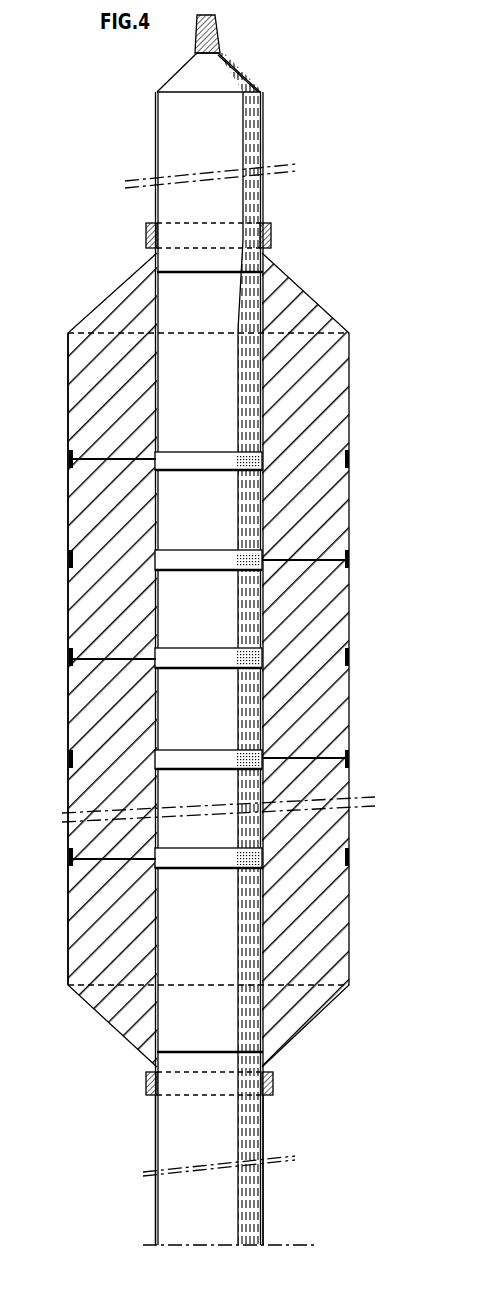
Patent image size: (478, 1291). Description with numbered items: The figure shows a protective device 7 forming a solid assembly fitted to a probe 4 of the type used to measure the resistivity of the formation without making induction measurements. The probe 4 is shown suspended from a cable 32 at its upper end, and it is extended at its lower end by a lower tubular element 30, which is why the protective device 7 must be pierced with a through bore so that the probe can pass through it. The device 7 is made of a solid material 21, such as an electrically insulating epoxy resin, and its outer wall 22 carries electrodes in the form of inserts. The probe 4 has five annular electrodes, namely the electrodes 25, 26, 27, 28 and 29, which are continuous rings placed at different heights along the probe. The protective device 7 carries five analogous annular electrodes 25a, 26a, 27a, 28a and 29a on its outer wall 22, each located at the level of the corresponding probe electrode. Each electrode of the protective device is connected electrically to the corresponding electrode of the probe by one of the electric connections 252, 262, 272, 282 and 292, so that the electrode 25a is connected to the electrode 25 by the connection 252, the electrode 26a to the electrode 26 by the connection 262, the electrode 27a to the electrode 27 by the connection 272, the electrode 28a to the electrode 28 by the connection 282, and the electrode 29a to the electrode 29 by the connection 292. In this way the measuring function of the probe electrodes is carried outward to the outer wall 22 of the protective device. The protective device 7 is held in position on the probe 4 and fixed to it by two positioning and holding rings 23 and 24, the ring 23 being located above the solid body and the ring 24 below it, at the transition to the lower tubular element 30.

The probe 4 is at (172, 310).
The protective device 7 is at (48, 332).
The solid material 21 is at (122, 990).
The outer wall 22 is at (70, 963).
The positioning and holding ring 23 is at (272, 232).
The positioning and holding ring 24 is at (146, 1088).
The annular electrode 25 is at (215, 462).
The annular electrode 25a is at (70, 462).
The electric connection 252 is at (105, 458).
The annular electrode 26 is at (215, 562).
The annular electrode 26a is at (349, 562).
The electric connection 262 is at (310, 558).
The annular electrode 27 is at (215, 660).
The annular electrode 27a is at (70, 662).
The electric connection 272 is at (107, 657).
The annular electrode 28 is at (215, 757).
The annular electrode 28a is at (349, 762).
The electric connection 282 is at (305, 758).
The annular electrode 29 is at (190, 869).
The annular electrode 29a is at (70, 862).
The electric connection 292 is at (108, 857).
The lower tubular element 30 is at (170, 1140).
The cable 32 is at (248, 37).